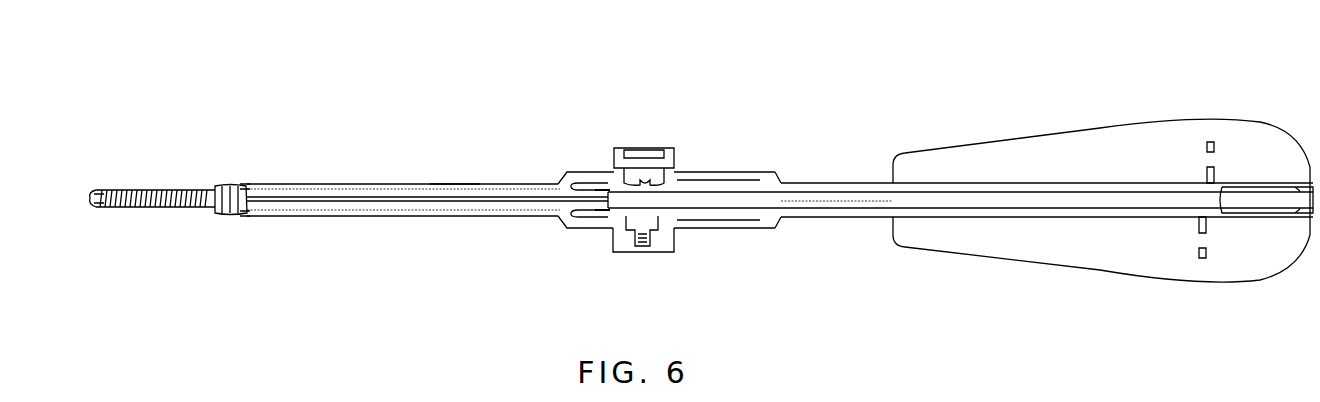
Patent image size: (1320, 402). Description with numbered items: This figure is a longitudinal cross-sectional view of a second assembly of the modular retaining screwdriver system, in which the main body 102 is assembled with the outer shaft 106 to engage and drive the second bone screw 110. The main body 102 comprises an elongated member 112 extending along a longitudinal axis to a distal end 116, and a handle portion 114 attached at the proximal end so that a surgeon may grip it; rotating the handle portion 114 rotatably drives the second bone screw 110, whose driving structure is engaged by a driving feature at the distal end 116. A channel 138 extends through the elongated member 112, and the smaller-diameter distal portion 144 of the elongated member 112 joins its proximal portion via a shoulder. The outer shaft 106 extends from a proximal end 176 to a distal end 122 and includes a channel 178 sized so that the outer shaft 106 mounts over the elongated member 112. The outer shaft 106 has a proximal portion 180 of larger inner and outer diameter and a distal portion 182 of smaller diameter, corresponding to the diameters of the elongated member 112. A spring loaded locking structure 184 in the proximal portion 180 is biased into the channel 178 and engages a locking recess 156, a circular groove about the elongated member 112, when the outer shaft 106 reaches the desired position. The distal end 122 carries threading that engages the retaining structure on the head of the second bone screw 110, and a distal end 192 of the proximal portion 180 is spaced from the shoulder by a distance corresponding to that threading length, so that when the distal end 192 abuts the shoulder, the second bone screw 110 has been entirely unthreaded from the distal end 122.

The main body 102 is at (823, 183).
The outer shaft 106 is at (433, 175).
The second bone screw 110 is at (148, 180).
The elongated member 112 is at (802, 200).
The handle portion 114 is at (1073, 152).
The distal end 116 is at (242, 214).
The distal end 122 is at (242, 183).
The channel 138 is at (723, 200).
The distal portion 144 is at (370, 183).
The locking recess 156 is at (670, 176).
The proximal end 176 is at (777, 170).
The channel 178 is at (606, 184).
The proximal portion 180 is at (610, 225).
The distal portion 182 is at (410, 217).
The locking structure 184 is at (637, 212).
The distal end 192 is at (565, 181).